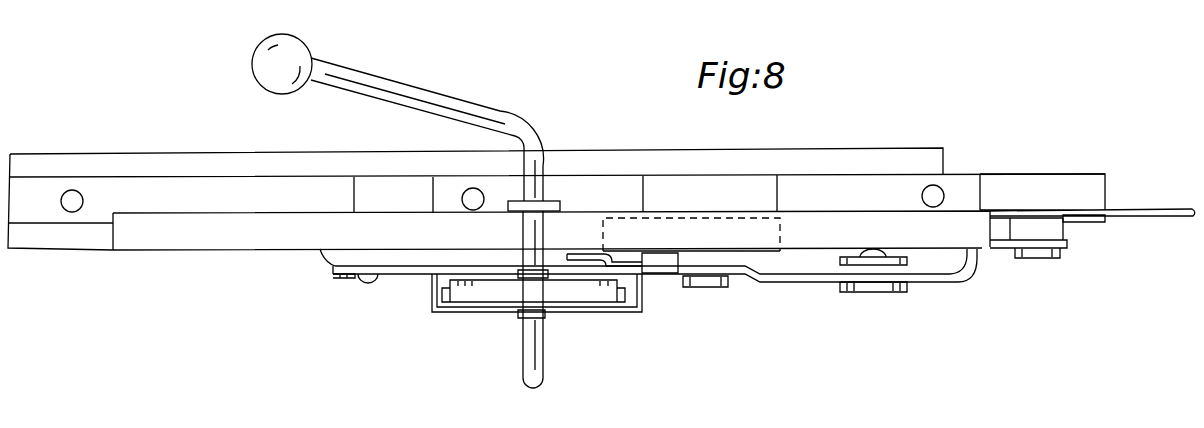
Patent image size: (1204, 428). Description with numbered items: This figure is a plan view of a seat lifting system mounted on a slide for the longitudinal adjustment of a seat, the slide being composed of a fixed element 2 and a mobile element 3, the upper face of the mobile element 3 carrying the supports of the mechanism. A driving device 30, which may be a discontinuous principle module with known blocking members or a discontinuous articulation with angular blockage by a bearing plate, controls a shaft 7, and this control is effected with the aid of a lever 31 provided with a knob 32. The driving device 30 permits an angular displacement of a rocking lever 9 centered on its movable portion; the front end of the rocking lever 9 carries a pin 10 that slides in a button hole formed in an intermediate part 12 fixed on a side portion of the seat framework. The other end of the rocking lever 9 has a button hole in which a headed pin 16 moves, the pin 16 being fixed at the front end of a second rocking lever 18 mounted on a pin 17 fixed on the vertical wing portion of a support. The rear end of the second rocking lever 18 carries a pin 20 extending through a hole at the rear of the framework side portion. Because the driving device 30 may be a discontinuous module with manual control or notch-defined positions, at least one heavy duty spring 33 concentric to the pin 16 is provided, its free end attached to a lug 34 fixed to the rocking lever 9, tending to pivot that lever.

The fixed element 2 is at (852, 160).
The mobile element 3 is at (1063, 185).
The shaft 7 is at (538, 357).
The rocking lever 9 is at (418, 275).
The pin 10 is at (368, 284).
The intermediate part 12 is at (327, 260).
The pin 16 is at (708, 288).
The pin 17 is at (890, 293).
The second rocking lever 18 is at (825, 270).
The pin 20 is at (1046, 260).
The driving device 30 is at (472, 297).
The lever 31 is at (432, 102).
The knob 32 is at (263, 77).
The heavy duty spring 33 is at (765, 237).
The lug 34 is at (596, 262).